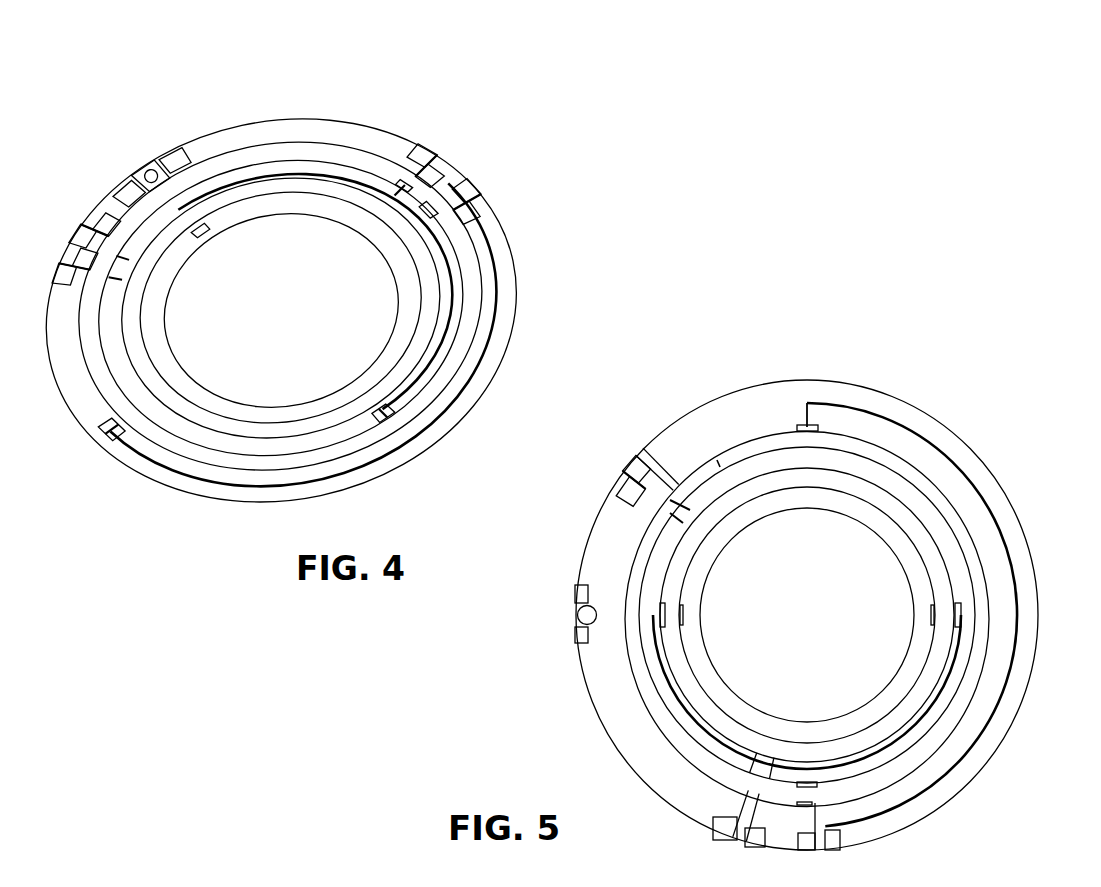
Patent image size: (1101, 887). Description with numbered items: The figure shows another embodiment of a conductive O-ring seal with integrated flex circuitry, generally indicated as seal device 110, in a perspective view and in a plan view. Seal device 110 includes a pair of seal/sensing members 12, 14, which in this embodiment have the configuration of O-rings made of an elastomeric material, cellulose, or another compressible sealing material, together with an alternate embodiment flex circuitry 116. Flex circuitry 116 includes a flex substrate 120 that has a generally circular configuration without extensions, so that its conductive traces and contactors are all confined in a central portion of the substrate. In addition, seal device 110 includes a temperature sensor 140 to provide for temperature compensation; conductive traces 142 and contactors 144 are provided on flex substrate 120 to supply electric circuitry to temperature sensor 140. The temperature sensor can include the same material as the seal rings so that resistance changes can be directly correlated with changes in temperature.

In FIG. 4, the seal device 110 is at (281, 310).
In FIG. 5, the seal device 110 is at (807, 615).
In FIG. 4, the flex circuitry 116 is at (295, 106).
In FIG. 5, the flex circuitry 116 is at (798, 362).
In FIG. 4, the flex substrate 120 is at (281, 307).
In FIG. 5, the flex substrate 120 is at (807, 615).
In FIG. 4, the seal/sensing member 14 is at (297, 350).
In FIG. 5, the seal/sensing member 14 is at (907, 614).
In FIG. 4, the seal/sensing member 12 is at (288, 307).
In FIG. 5, the seal/sensing member 12 is at (807, 623).
In FIG. 4, the temperature sensor 140 is at (150, 176).
In FIG. 5, the temperature sensor 140 is at (578, 615).
In FIG. 4, the conductive traces 142 is at (150, 175).
In FIG. 4, the contactors 144 is at (151, 177).